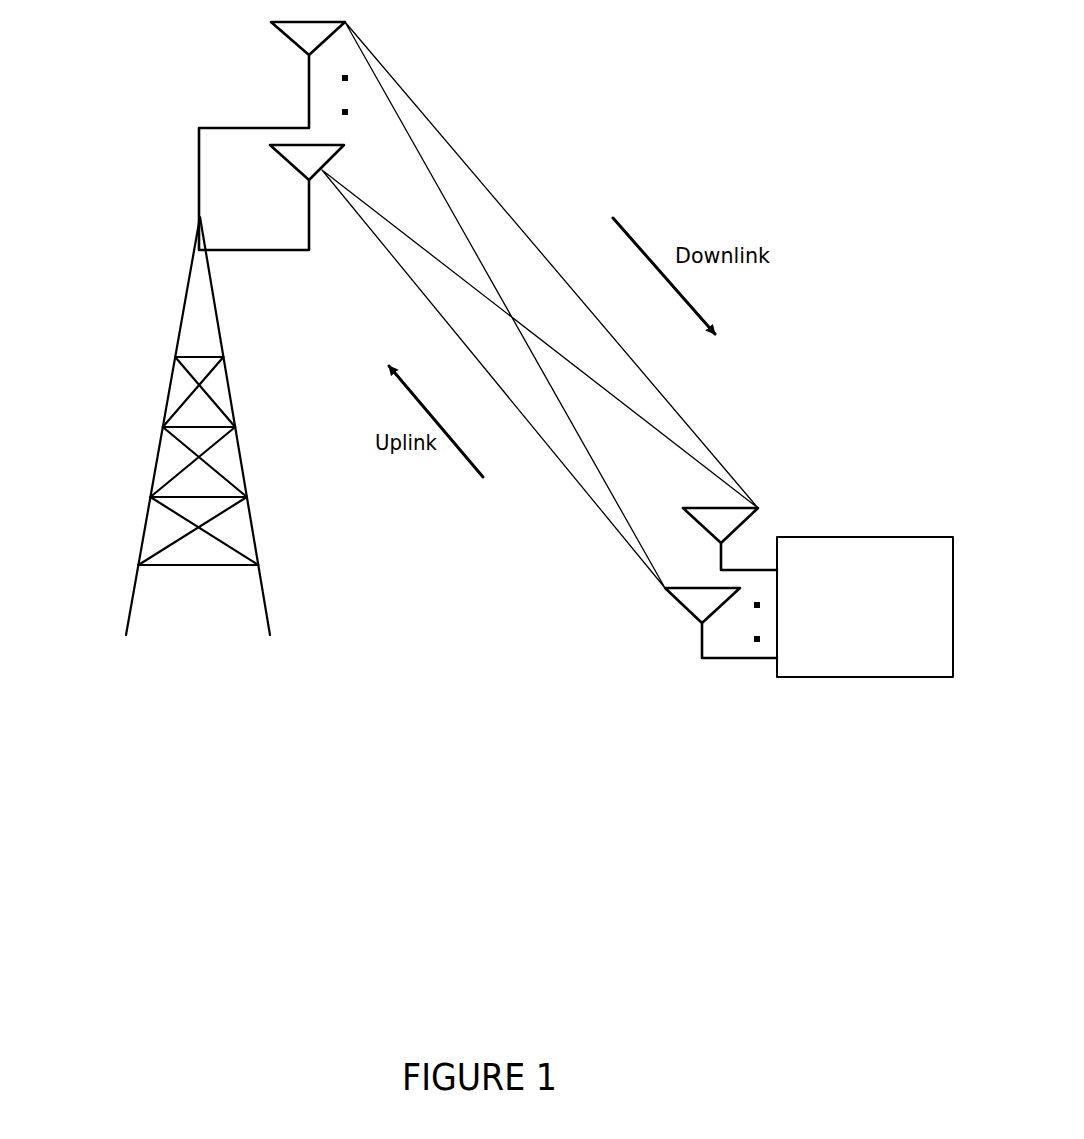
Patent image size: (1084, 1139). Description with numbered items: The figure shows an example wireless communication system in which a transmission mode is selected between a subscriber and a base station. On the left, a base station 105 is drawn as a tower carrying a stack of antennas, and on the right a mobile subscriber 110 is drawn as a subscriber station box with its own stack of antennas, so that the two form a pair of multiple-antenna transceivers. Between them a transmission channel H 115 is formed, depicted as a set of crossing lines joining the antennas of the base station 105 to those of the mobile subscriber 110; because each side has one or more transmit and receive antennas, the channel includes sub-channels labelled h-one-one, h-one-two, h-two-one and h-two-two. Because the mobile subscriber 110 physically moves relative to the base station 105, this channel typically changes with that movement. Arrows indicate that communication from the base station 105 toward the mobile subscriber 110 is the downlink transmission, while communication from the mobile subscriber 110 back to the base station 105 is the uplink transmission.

The base station 105 is at (198, 313).
The mobile subscriber 110 is at (843, 660).
The transmission channel H 115 is at (523, 307).